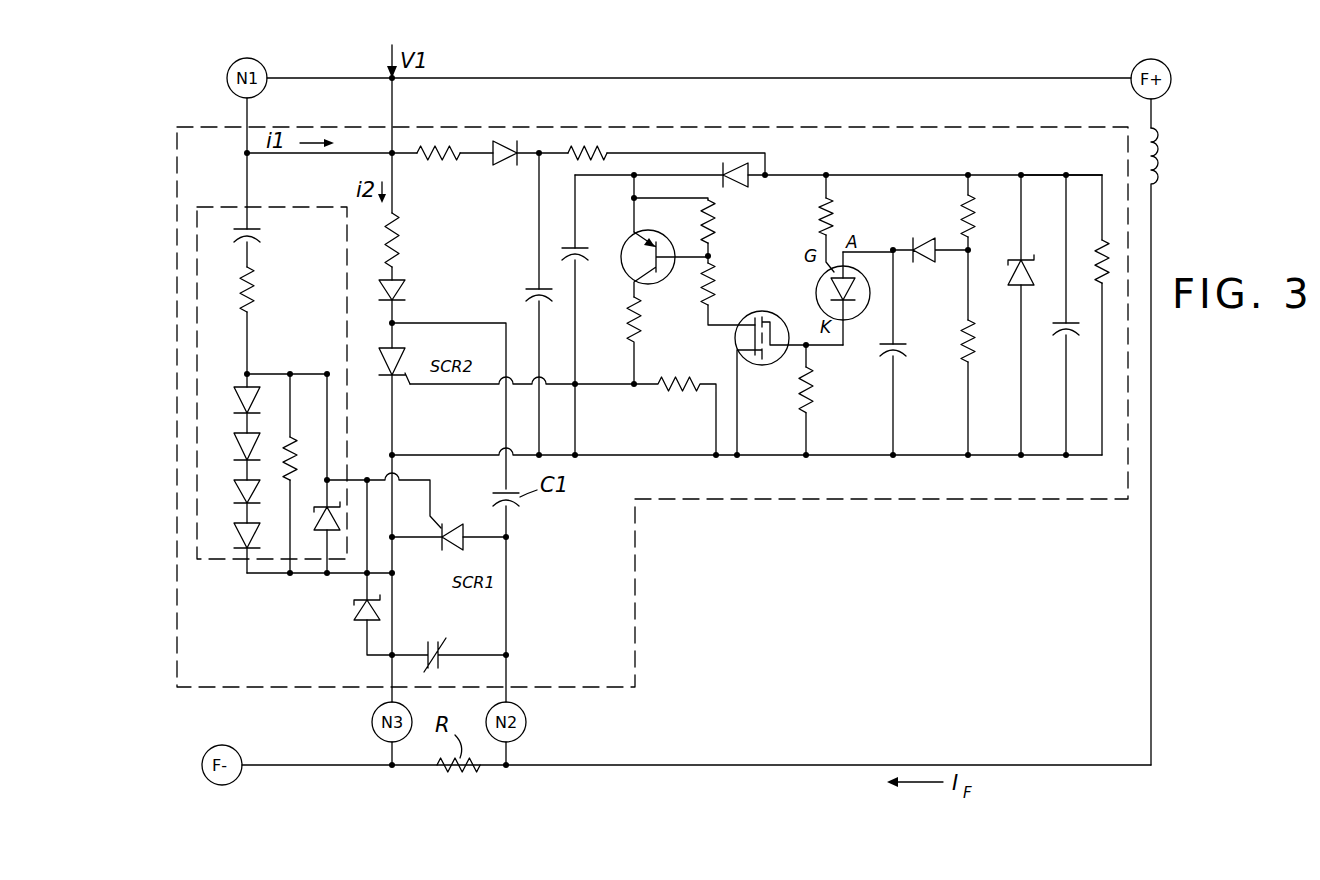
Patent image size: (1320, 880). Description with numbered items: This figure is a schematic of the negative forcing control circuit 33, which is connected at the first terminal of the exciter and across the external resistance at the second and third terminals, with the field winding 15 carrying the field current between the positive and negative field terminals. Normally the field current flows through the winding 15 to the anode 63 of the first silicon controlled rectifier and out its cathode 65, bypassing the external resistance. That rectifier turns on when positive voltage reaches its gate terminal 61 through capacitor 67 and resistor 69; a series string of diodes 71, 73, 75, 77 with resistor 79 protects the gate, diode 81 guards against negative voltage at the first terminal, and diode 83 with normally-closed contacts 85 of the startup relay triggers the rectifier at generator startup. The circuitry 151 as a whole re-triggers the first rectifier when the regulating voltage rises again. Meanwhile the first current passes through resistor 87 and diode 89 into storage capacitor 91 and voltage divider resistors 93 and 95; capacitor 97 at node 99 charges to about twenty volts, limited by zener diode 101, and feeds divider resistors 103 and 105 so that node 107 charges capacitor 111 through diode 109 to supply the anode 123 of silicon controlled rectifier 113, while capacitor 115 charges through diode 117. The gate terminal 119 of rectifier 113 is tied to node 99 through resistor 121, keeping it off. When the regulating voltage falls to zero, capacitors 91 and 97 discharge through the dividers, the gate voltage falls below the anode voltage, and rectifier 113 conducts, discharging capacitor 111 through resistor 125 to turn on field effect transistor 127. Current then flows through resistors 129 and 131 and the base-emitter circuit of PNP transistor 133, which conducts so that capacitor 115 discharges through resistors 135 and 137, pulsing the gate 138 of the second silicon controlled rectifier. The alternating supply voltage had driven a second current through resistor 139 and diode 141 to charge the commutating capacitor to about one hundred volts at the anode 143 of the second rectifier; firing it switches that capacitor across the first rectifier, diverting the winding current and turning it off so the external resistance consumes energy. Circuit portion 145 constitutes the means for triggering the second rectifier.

The winding 15 is at (1190, 162).
The negative forcing control circuit 33 is at (850, 500).
The circuitry 151 is at (322, 172).
The gate terminal 61 is at (432, 503).
The anode 63 is at (466, 538).
The cathode 65 is at (418, 543).
The capacitor 67 is at (256, 240).
The resistor 69 is at (256, 306).
The diode 71 is at (245, 378).
The diode 73 is at (240, 445).
The diode 75 is at (240, 505).
The diode 77 is at (240, 552).
The resistor 79 is at (292, 452).
The diode 81 is at (325, 520).
The diode 83 is at (352, 607).
The normally-closed contacts 85 is at (432, 650).
The resistor 87 is at (438, 165).
The diode 89 is at (508, 165).
The storage capacitor 91 is at (532, 288).
The voltage divider resistor 93 is at (605, 152).
The voltage divider resistor 95 is at (1100, 266).
The capacitor 97 is at (1063, 340).
The node 99 is at (1082, 158).
The zener diode 101 is at (972, 350).
The voltage divider resistor 103 is at (968, 214).
The voltage divider resistor 105 is at (1002, 305).
The node 107 is at (972, 250).
The diode 109 is at (934, 244).
The capacitor 111 is at (904, 388).
The silicon controlled rectifier 113 is at (818, 278).
The capacitor 115 is at (578, 246).
The diode 117 is at (729, 186).
The gate terminal 119 is at (834, 249).
The resistor 121 is at (836, 210).
The anode 123 is at (892, 300).
The resistor 125 is at (815, 400).
The field effect transistor 127 is at (760, 368).
The resistor 129 is at (717, 236).
The resistor 131 is at (717, 290).
The PNP transistor 133 is at (652, 285).
The resistor 135 is at (626, 326).
The resistor 137 is at (676, 392).
The gate 138 is at (436, 386).
The resistor 139 is at (400, 247).
The diode 141 is at (404, 292).
The anode 143 is at (400, 339).
The circuit portion 145 is at (668, 472).